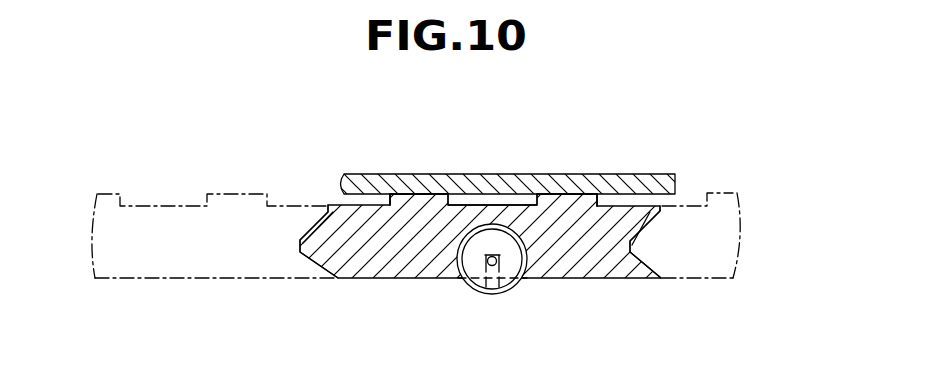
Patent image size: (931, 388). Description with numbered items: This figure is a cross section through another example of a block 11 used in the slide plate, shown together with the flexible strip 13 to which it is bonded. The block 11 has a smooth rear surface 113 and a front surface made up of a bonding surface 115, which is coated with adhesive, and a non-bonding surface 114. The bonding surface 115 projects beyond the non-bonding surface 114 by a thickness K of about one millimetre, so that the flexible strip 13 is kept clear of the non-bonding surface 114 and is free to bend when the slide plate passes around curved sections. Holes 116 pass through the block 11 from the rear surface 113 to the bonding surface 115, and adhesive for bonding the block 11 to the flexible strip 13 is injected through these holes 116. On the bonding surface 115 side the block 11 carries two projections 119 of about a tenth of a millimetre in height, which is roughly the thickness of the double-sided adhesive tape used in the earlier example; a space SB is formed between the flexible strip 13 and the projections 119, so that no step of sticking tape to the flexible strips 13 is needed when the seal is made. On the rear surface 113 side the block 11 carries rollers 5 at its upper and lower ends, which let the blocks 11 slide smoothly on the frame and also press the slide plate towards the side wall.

The block 11 is at (601, 141).
The flexible strip 13 is at (649, 174).
The rear surface 113 is at (615, 279).
The non-bonding surface 114 is at (376, 205).
The bonding surface 115 is at (462, 204).
The hole 116 is at (507, 209).
The projection 119 is at (410, 204).
The roller 5 is at (508, 267).
The space SB is at (498, 182).
The thickness K is at (768, 140).